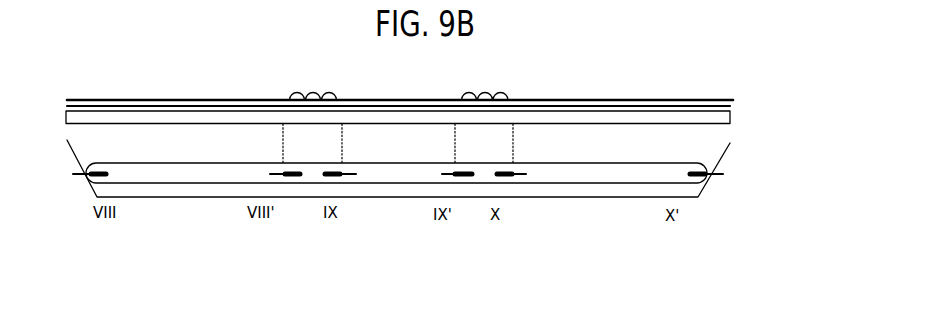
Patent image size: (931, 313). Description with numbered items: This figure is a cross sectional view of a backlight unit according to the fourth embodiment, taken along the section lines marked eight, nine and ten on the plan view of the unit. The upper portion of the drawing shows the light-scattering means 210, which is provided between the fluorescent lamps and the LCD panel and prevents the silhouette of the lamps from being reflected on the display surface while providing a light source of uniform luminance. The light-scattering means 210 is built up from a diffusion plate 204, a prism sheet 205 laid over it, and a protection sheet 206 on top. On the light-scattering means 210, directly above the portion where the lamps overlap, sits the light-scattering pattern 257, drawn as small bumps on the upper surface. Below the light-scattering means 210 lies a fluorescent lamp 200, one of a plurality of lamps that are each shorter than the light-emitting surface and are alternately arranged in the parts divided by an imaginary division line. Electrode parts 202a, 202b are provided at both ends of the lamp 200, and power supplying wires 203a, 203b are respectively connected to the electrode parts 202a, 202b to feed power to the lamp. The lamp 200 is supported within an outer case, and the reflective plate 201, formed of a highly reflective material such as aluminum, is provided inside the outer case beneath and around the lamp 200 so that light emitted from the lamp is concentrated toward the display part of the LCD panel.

The fluorescent lamp 200 is at (220, 181).
The reflective plate 201 is at (473, 197).
The electrode part 202a is at (100, 180).
The electrode part 202b is at (328, 177).
The power supplying wire 203a is at (83, 177).
The power supplying wire 203b is at (350, 176).
The diffusion plate 204 is at (730, 117).
The prism sheet 205 is at (730, 107).
The protection sheet 206 is at (712, 100).
The light-scattering means 210 is at (450, 101).
The light-scattering pattern 257 is at (328, 93).